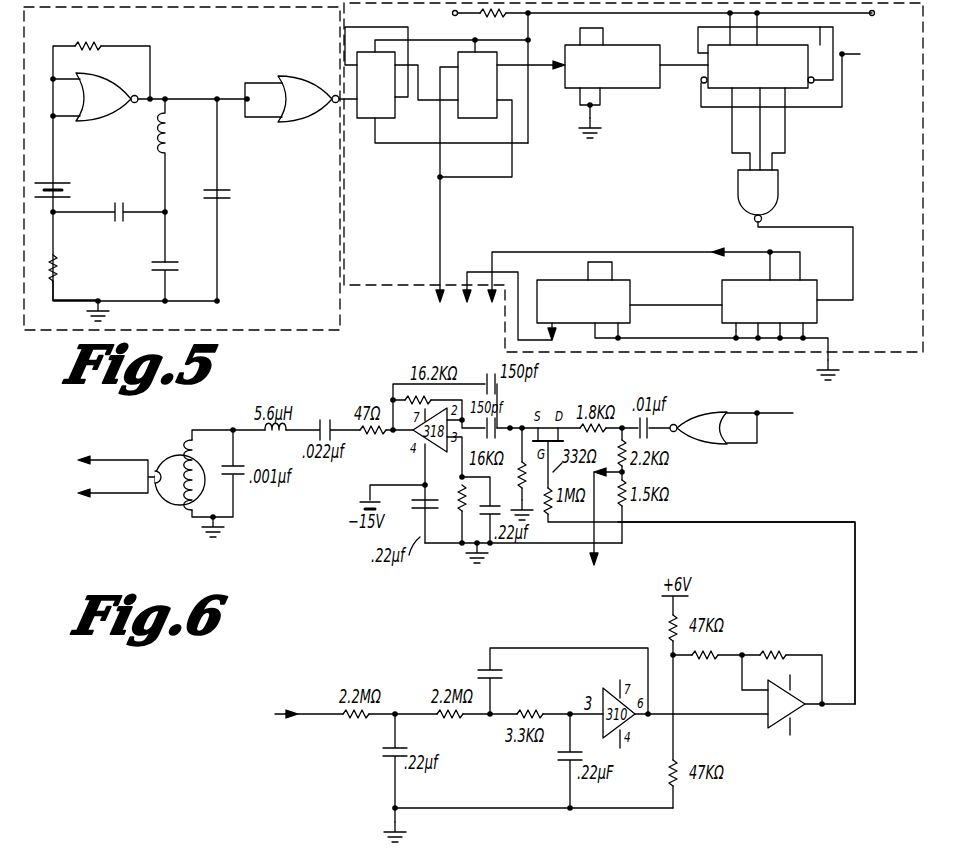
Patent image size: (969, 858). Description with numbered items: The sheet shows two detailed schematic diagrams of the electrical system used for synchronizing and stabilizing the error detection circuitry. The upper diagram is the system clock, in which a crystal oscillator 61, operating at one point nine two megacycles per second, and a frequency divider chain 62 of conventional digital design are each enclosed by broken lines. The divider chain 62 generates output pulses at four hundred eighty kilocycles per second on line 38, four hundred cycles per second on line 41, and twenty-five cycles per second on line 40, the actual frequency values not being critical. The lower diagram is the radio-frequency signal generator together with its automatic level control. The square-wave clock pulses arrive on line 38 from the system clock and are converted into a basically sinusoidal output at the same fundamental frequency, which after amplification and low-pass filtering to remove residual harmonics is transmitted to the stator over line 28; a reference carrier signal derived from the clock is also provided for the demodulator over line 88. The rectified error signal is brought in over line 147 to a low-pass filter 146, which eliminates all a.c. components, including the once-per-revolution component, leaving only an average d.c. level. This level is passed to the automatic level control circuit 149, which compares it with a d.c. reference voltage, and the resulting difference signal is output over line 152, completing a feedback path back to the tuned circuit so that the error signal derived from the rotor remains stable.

In FIG. 5, the crystal oscillator 61 is at (262, 331).
In FIG. 5, the frequency divider chain 62 is at (873, 353).
In FIG. 5, the line 38 is at (440, 257).
In FIG. 6, the line 38 is at (777, 421).
In FIG. 5, the line 40 is at (533, 250).
In FIG. 5, the line 41 is at (502, 252).
In FIG. 6, the line 28 is at (110, 461).
In FIG. 6, the line 88 is at (594, 530).
In FIG. 6, the line 152 is at (763, 522).
In FIG. 6, the low-pass filter 146 is at (466, 664).
In FIG. 6, the line 147 is at (277, 711).
In FIG. 6, the automatic level control circuit 149 is at (768, 767).